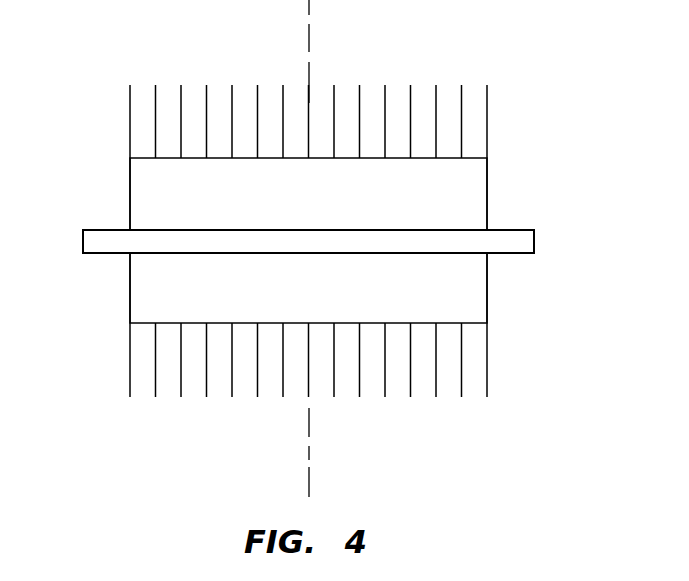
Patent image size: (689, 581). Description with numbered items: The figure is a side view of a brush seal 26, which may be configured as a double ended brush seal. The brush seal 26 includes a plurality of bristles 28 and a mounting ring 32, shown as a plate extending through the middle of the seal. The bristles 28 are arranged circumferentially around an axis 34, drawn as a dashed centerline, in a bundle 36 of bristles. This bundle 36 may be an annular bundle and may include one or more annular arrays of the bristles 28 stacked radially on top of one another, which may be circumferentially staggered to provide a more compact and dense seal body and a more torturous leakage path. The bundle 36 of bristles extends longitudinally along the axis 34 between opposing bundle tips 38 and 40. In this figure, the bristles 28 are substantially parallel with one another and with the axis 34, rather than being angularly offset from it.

The brush seal 26 is at (299, 243).
The bristles 28 is at (362, 243).
The mounting ring 32 is at (124, 262).
The axis 34 is at (311, 480).
The bundle of bristles 36 is at (110, 124).
The bundle tip 38 is at (180, 85).
The bundle tip 40 is at (182, 405).